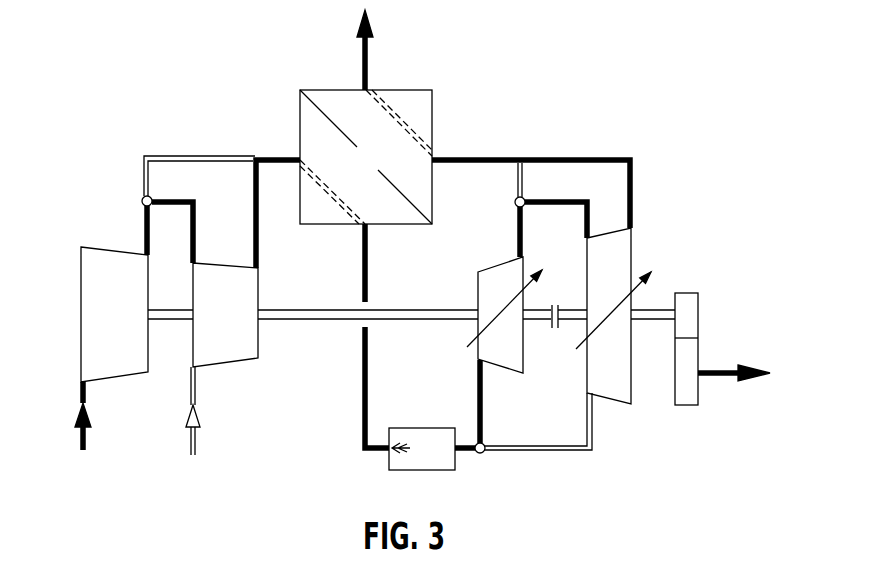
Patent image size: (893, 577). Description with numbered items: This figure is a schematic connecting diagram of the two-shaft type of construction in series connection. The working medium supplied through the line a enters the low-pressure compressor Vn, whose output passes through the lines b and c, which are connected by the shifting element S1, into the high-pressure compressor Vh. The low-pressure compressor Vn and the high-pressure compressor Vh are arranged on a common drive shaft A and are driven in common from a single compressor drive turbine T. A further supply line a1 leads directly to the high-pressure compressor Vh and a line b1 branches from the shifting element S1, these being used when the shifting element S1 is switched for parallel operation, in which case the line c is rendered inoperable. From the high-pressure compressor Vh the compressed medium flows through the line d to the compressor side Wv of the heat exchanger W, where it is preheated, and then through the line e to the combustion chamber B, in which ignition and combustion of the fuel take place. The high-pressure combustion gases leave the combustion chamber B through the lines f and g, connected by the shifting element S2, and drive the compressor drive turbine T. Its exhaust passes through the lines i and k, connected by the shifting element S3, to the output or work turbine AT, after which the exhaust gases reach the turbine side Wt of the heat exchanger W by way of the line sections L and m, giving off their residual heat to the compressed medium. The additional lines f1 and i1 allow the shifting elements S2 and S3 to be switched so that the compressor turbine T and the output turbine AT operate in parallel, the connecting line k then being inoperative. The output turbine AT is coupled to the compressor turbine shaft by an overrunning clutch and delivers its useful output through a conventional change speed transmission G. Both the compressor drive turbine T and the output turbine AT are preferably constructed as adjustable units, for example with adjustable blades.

The common drive shaft A is at (340, 322).
The low-pressure compressor Vn is at (87, 333).
The high-pressure compressor Vh is at (250, 332).
The line a is at (86, 440).
The line a1 is at (197, 440).
The line b is at (143, 232).
The line b1 is at (184, 156).
The line c is at (195, 233).
The line d is at (254, 213).
The shifting element S1 is at (143, 197).
The heat exchanger W is at (366, 117).
The compressor side of the heat exchanger Wv is at (305, 125).
The turbine side of the heat exchanger Wt is at (422, 107).
The line e is at (365, 403).
The combustion chamber B is at (417, 427).
The line f is at (470, 452).
The line f1 is at (568, 450).
The shifting element S2 is at (486, 455).
The line g is at (483, 413).
The compressor drive turbine T is at (478, 285).
The line i is at (518, 237).
The line i1 is at (517, 180).
The shifting element S3 is at (525, 197).
The connecting line k is at (582, 200).
The line section m is at (493, 158).
The line section L is at (618, 157).
The output or work turbine AT is at (626, 253).
The transmission G is at (695, 350).